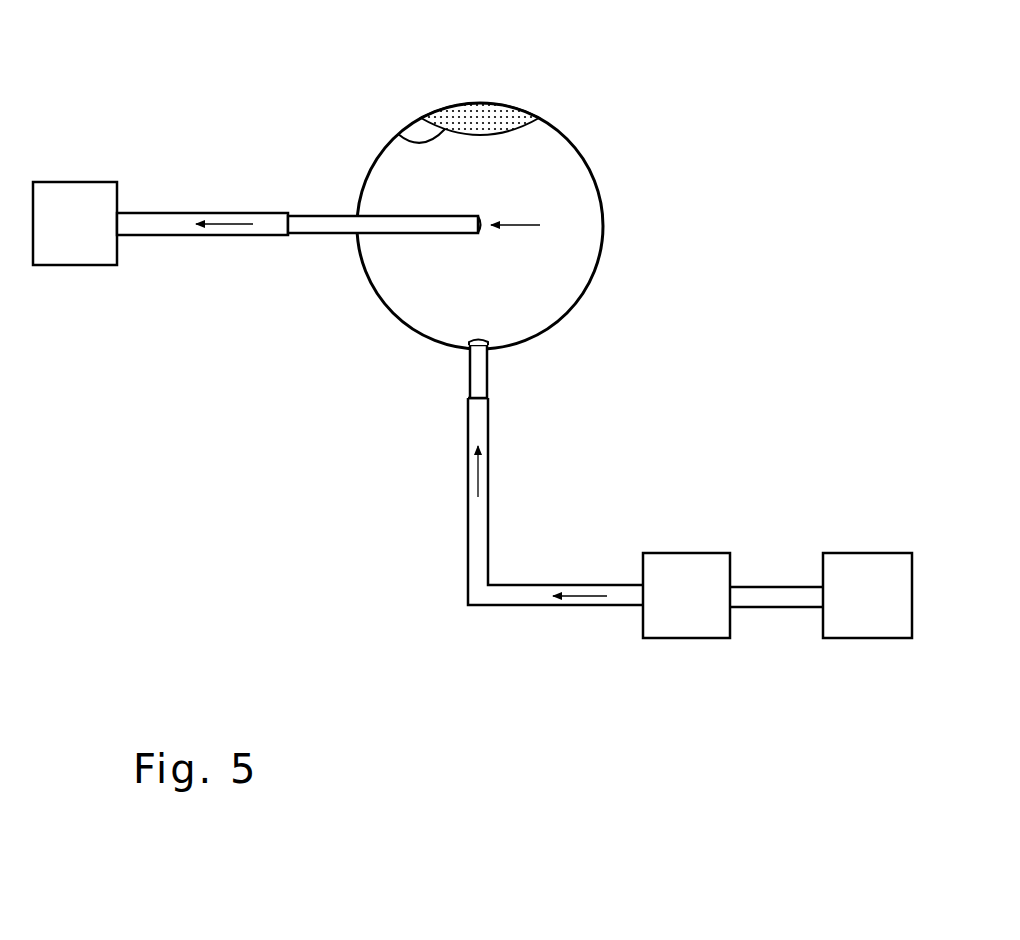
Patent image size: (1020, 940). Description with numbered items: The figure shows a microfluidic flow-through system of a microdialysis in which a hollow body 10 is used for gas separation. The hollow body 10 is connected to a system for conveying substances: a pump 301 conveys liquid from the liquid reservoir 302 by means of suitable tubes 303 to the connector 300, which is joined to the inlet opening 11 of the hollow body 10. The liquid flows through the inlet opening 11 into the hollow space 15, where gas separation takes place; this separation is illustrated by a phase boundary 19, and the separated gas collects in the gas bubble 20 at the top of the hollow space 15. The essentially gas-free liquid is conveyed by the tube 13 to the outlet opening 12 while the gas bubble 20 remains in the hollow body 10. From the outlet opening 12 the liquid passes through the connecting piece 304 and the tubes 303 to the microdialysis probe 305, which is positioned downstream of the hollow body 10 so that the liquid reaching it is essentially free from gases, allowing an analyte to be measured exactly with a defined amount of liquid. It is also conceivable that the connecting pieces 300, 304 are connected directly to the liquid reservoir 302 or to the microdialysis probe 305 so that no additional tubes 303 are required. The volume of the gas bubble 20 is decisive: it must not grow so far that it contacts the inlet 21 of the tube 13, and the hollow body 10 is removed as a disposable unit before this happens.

The hollow body 10 is at (592, 148).
The hollow space 15 is at (573, 200).
The gas bubble 20 is at (503, 104).
The phase boundary 19 is at (412, 130).
The inlet of the tube 21 is at (483, 229).
The outlet opening 12 is at (352, 235).
The tube 13 is at (427, 235).
The inlet opening 11 is at (477, 341).
The connector 300 is at (488, 358).
The tubes 303 is at (183, 213).
The connecting piece 304 is at (342, 216).
The microdialysis probe 305 is at (72, 182).
The liquid reservoir 302 is at (695, 638).
The pump 301 is at (873, 638).